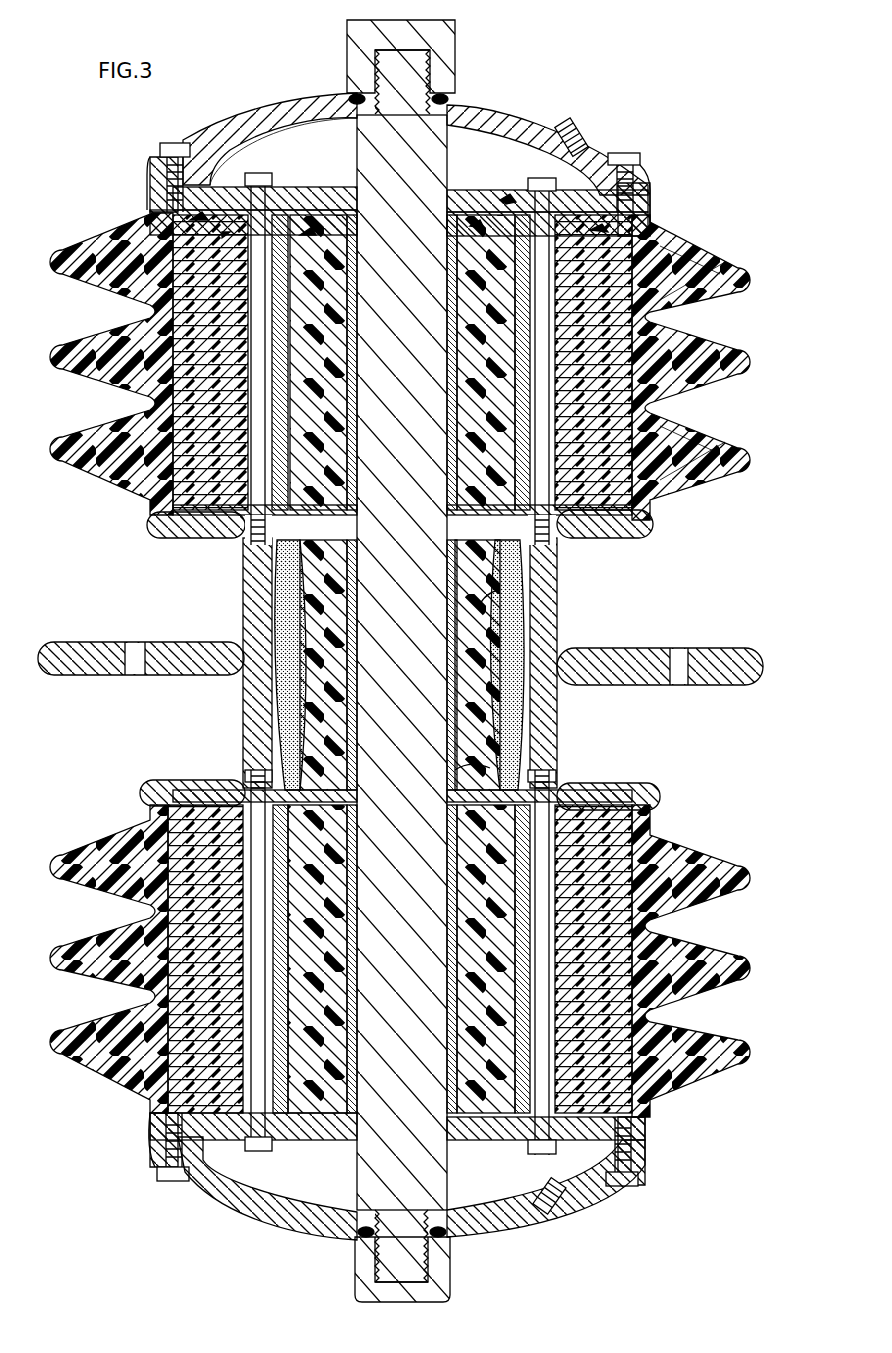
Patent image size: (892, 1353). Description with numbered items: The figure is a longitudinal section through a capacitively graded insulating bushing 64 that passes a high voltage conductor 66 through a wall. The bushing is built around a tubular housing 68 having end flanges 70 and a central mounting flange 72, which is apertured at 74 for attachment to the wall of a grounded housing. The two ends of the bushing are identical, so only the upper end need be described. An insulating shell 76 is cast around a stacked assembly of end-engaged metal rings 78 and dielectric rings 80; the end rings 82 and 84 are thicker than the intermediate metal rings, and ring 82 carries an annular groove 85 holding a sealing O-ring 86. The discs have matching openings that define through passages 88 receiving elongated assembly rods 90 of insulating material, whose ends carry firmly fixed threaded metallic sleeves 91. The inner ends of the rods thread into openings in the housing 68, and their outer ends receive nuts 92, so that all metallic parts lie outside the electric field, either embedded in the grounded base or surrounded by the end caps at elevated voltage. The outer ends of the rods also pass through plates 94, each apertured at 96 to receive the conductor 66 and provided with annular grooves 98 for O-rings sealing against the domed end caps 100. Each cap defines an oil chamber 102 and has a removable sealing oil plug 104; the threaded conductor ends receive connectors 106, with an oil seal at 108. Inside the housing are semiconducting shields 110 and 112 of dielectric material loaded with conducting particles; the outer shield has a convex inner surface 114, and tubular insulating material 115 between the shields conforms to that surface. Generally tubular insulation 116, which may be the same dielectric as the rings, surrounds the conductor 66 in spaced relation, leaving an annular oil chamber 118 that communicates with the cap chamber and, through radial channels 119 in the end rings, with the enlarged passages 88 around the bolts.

The insulating bushing 64 is at (645, 185).
The high voltage conductor 66 is at (350, 122).
The tubular housing 68 is at (258, 602).
The end flanges 70 is at (187, 786).
The central mounting flange 72 is at (90, 643).
The aperture 74 is at (680, 652).
The insulating shell 76 is at (700, 350).
The metal rings 78 is at (620, 406).
The dielectric rings 80 is at (620, 320).
The end ring 82 is at (160, 222).
The end ring 84 is at (168, 540).
The annular groove 85 is at (632, 232).
The sealing O-ring 86 is at (598, 212).
The through passages 88 is at (163, 405).
The assembly rods 90 is at (205, 315).
The threaded metallic sleeves 91 is at (275, 197).
The nuts 92 is at (250, 188).
The plates 94 is at (518, 195).
The aperture 96 is at (460, 190).
The annular grooves 98 is at (170, 200).
The end caps 100 is at (251, 126).
The oil chamber 102 is at (327, 156).
The sealing oil plugs 104 is at (578, 134).
The connectors 106 is at (455, 55).
The oil seal 108 is at (462, 107).
The semiconducting shield 110 is at (458, 768).
The semiconducting shield 112 is at (518, 738).
The inner surface 114 is at (502, 640).
The tubular insulating material 115 is at (512, 600).
The tubular insulation 116 is at (478, 312).
The annular oil chamber 118 is at (358, 360).
The radial channels 119 is at (330, 232).